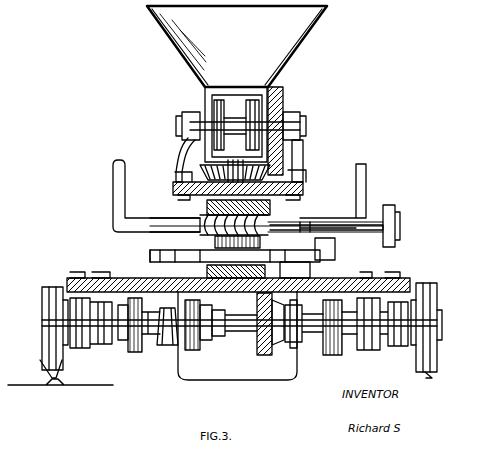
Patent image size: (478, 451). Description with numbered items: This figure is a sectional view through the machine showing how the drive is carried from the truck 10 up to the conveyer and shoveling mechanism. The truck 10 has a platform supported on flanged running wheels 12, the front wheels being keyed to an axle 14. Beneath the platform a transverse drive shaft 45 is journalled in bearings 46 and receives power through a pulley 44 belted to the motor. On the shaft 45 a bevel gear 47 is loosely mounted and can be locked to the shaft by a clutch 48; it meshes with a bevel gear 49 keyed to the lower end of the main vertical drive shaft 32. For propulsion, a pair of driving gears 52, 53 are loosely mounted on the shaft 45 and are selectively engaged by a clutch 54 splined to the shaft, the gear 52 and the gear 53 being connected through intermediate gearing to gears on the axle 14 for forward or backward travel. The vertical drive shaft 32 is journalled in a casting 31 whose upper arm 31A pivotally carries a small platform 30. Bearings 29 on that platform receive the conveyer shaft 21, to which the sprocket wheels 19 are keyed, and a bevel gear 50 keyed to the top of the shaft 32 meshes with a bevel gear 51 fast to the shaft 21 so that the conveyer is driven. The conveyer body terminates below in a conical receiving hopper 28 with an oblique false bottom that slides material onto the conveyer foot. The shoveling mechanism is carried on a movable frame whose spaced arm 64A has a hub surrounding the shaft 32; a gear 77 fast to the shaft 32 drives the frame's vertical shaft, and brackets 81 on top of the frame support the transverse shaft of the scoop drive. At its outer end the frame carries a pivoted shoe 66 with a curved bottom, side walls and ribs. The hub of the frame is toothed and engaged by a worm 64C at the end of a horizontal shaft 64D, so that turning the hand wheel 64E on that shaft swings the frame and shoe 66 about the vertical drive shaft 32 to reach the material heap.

The conical receiving hopper 28 is at (303, 40).
The sprocket wheels 19 is at (216, 104).
The bevel gear 51 is at (276, 92).
The shaft 21 is at (306, 124).
The bearings 29 is at (303, 158).
The bevel gear 50 is at (208, 168).
The small platform 30 is at (303, 190).
The brackets 81 is at (118, 178).
The upper arm 31A is at (270, 208).
The main vertical drive shaft 32 is at (207, 208).
The gear 77 is at (216, 242).
The arm 64A is at (288, 250).
The horizontal shaft 64D is at (330, 233).
The hand wheel 64E is at (400, 238).
The worm 64C is at (205, 256).
The casting 31 is at (265, 271).
The truck 10 is at (408, 285).
The bearings 46 is at (122, 278).
The running wheels 12 is at (43, 357).
The axle 14 is at (442, 325).
The transverse drive shaft 45 is at (88, 348).
The driving gear 52 is at (135, 353).
The clutch 54 is at (167, 348).
The driving gear 53 is at (194, 352).
The bevel gear 49 is at (222, 336).
The bevel gear 47 is at (263, 355).
The clutch 48 is at (295, 348).
The pulley 44 is at (345, 348).
The shoe 66 is at (297, 380).